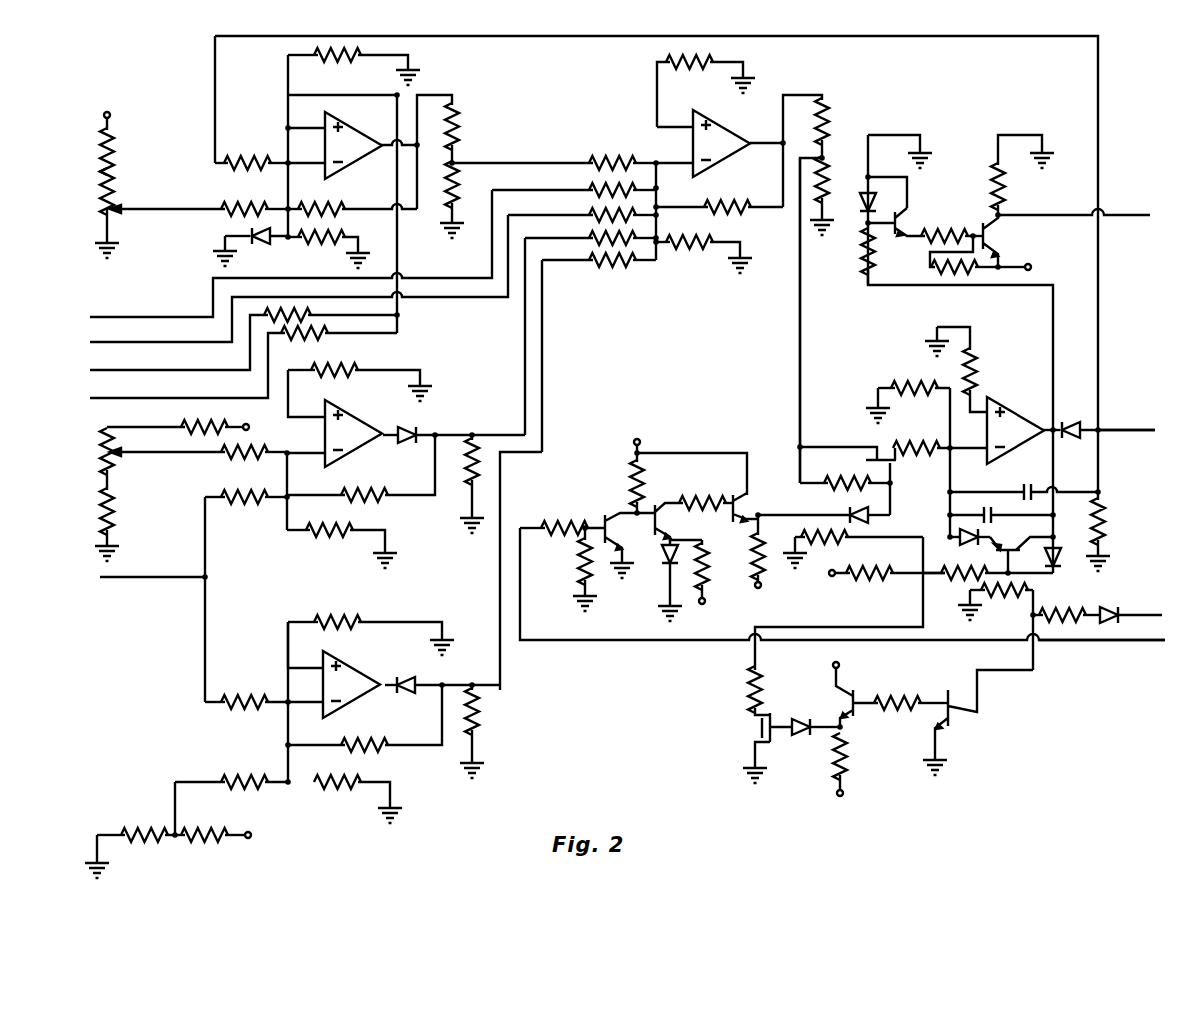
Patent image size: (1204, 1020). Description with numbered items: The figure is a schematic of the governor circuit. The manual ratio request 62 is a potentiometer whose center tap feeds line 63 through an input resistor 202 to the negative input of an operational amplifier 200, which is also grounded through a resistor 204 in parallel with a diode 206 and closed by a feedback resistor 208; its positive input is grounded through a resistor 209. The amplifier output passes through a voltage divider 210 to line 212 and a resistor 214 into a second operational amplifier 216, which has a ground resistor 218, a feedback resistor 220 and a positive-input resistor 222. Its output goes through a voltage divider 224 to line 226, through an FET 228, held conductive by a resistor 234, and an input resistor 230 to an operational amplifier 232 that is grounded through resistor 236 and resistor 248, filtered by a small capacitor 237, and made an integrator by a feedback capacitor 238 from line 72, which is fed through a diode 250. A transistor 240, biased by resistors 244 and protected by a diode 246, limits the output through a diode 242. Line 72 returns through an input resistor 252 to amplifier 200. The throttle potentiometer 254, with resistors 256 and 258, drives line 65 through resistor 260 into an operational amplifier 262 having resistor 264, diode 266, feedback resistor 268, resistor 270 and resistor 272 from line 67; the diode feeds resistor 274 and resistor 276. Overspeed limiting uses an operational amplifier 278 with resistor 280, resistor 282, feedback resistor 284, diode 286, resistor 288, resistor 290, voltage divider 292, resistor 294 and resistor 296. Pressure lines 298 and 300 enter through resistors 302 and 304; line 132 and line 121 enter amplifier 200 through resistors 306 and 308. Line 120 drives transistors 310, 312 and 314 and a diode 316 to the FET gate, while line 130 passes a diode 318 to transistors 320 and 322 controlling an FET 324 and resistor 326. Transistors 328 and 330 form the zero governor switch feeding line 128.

The manual ratio request 62 is at (94, 191).
The line 63 is at (130, 206).
The line 65 is at (172, 454).
The line 67 is at (132, 578).
The line 72 is at (1124, 428).
The line 120 is at (1112, 640).
The line 121 is at (98, 402).
The line 128 is at (1122, 217).
The line 130 is at (1132, 614).
The line 132 is at (98, 370).
The operational amplifier 200 is at (364, 128).
The input resistor 202 is at (264, 204).
The resistor 204 is at (320, 242).
The diode 206 is at (250, 230).
The feedback resistor 208 is at (316, 205).
The resistor 209 is at (324, 55).
The voltage divider 210 is at (461, 122).
The line 212 is at (486, 160).
The resistor 214 is at (612, 159).
The operational amplifier 216 is at (722, 126).
The resistor 218 is at (697, 243).
The feedback resistor 220 is at (726, 206).
The resistor 222 is at (681, 64).
The voltage divider 224 is at (824, 126).
The line 226 is at (802, 304).
The FET 228 is at (895, 466).
The input resistor 230 is at (930, 446).
The operational amplifier 232 is at (1010, 402).
The resistor 234 is at (856, 482).
The resistor 236 is at (903, 384).
The filtering capacitor 237 is at (994, 500).
The feedback capacitor 238 is at (1036, 492).
The transistor 240 is at (985, 548).
The diode 242 is at (979, 538).
The resistors 244 is at (838, 538).
The diode 246 is at (1060, 555).
The resistor 248 is at (974, 366).
The diode 250 is at (1068, 421).
The input resistor 252 is at (246, 159).
The variable potentiometer 254 is at (99, 454).
The resistor 256 is at (98, 504).
The resistor 258 is at (188, 424).
The resistor 260 is at (250, 456).
The operational amplifier 262 is at (343, 452).
The resistor 264 is at (330, 374).
The diode 266 is at (420, 422).
The feedback resistor 268 is at (366, 496).
The resistor 270 is at (334, 532).
The resistor 272 is at (250, 500).
The resistor 274 is at (470, 485).
The resistor 276 is at (596, 242).
The operational amplifier 278 is at (342, 667).
The resistor 280 is at (336, 622).
The resistor 282 is at (244, 700).
The feedback resistor 284 is at (378, 746).
The diode 286 is at (407, 688).
The resistor 288 is at (339, 784).
The resistor 290 is at (242, 782).
The voltage divider 292 is at (138, 838).
The resistor 294 is at (476, 724).
The resistor 296 is at (618, 265).
The input line 298 is at (151, 316).
The input line 300 is at (96, 340).
The resistor 302 is at (592, 188).
The resistor 304 is at (592, 214).
The resistor 306 is at (306, 314).
The resistor 308 is at (318, 335).
The transistor 310 is at (604, 518).
The transistor 312 is at (653, 504).
The transistor 314 is at (736, 522).
The diode 316 is at (842, 512).
The diode 318 is at (1126, 586).
The transistor 320 is at (958, 698).
The transistor 322 is at (856, 690).
The FET 324 is at (776, 744).
The resistor 326 is at (750, 680).
The transistor 328 is at (908, 216).
The transistor 330 is at (1002, 232).